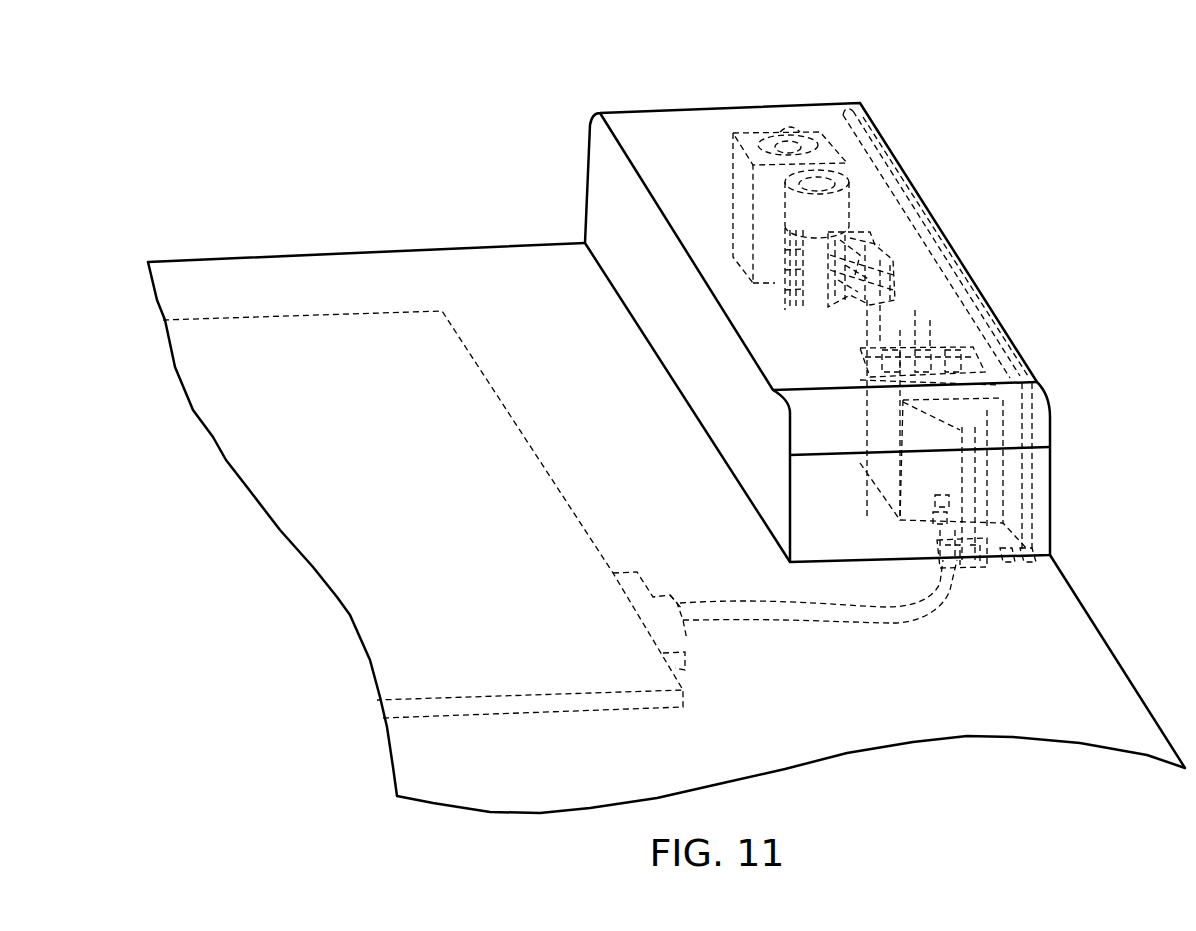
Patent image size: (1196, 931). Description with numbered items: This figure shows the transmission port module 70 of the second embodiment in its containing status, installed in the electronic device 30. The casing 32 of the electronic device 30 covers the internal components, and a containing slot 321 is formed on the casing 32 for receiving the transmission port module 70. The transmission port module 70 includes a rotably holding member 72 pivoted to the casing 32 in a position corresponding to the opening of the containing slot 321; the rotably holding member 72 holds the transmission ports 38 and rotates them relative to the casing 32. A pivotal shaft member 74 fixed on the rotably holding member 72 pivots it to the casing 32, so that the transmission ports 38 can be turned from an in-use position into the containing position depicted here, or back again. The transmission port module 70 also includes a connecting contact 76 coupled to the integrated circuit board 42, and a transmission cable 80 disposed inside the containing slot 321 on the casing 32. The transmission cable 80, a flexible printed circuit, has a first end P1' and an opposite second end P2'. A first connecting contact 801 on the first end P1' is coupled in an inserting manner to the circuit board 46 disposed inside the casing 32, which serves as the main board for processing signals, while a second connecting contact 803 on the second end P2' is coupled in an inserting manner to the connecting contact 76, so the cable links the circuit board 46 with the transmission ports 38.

The electronic device 30 is at (371, 118).
The casing 32 is at (672, 107).
The containing slot 321 is at (827, 115).
The transmission ports 38 is at (815, 142).
The integrated circuit board 42 is at (967, 517).
The circuit board 46 is at (322, 342).
The transmission port module 70 is at (890, 137).
The rotably holding member 72 is at (970, 327).
The pivotal shaft member 74 is at (1033, 557).
The connecting contact 76 is at (1007, 557).
The transmission cable 80 is at (855, 636).
The first connecting contact 801 is at (680, 623).
The second connecting contact 803 is at (947, 573).
The first end P1' is at (796, 708).
The second end P2' is at (995, 689).